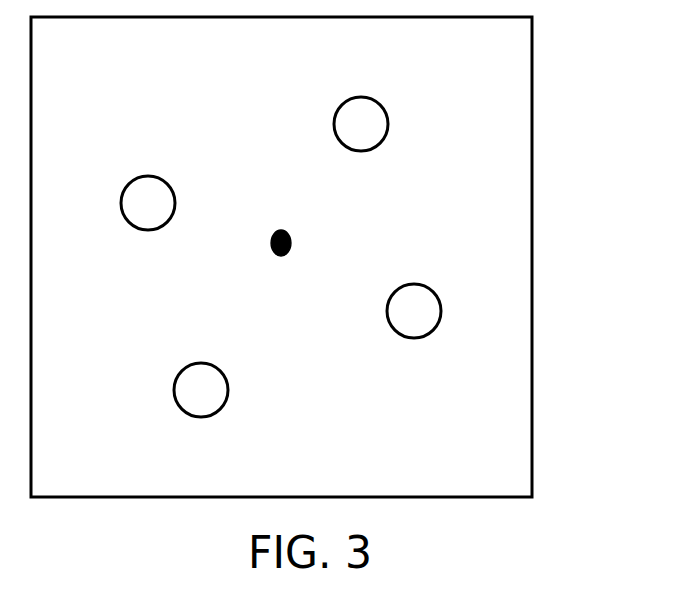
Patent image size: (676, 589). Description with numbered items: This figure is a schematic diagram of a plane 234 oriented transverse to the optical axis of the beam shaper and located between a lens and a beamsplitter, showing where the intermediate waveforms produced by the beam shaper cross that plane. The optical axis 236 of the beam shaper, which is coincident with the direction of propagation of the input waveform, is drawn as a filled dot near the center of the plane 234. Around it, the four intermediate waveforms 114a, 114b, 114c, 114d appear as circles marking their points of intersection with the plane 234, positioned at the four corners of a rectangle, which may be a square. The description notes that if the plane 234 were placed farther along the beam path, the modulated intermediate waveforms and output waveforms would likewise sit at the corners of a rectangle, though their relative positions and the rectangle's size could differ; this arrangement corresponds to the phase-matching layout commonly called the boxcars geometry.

The plane 234 is at (532, 150).
The optical axis 236 is at (280, 256).
The intermediate waveform 114a is at (361, 97).
The intermediate waveform 114b is at (150, 176).
The intermediate waveform 114c is at (411, 338).
The intermediate waveform 114d is at (202, 417).